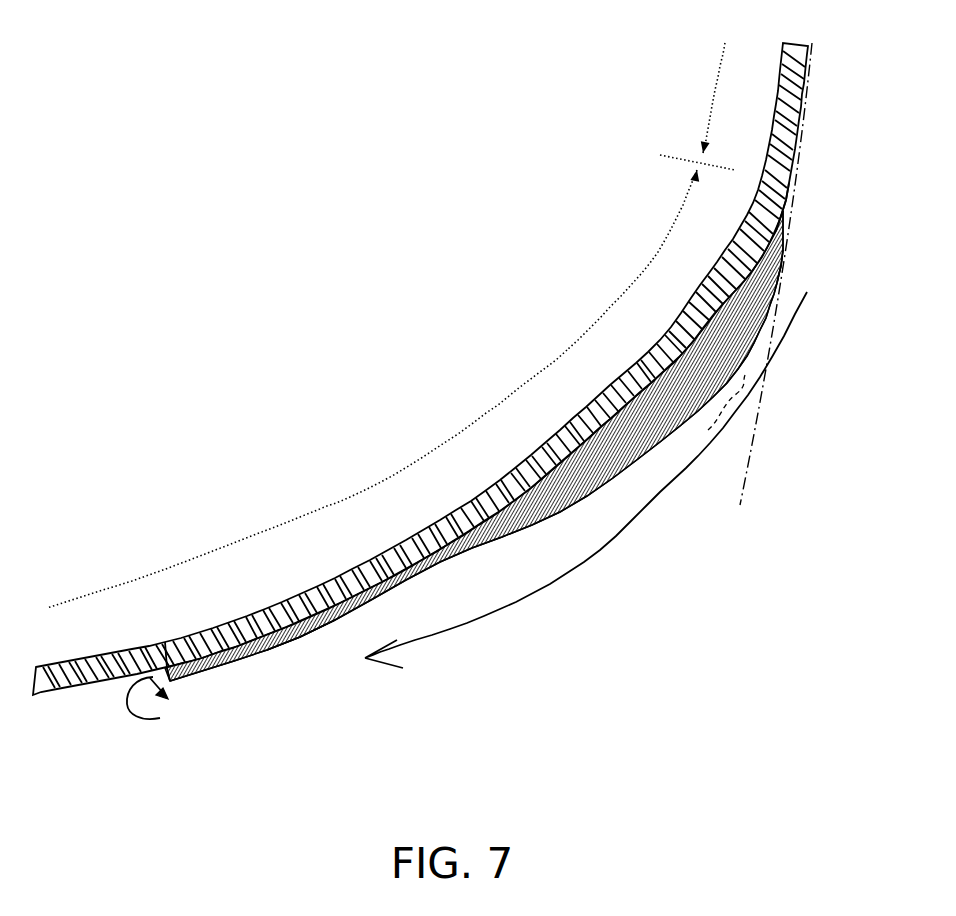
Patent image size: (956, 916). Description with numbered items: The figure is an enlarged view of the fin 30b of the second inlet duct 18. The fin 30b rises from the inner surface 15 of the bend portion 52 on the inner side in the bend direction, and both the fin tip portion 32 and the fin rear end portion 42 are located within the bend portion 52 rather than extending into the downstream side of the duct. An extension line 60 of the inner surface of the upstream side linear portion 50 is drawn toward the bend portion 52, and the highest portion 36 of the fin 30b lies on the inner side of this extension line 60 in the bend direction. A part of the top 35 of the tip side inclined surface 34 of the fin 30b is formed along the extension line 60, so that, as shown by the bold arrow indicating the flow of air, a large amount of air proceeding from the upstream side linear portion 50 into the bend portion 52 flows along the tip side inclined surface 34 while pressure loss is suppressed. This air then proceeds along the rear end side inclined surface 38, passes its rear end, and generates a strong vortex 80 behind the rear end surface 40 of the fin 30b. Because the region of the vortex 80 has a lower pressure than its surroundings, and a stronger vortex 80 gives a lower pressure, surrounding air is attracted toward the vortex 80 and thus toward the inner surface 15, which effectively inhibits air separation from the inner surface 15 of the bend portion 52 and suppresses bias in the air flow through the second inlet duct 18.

The inner surface 15 is at (84, 688).
The second inlet duct 18 is at (365, 557).
The fin 30b is at (319, 632).
The fin tip portion 32 is at (781, 211).
The tip side inclined surface 34 is at (781, 268).
The top 35 is at (640, 460).
The highest portion 36 is at (716, 413).
The rear end side inclined surface 38 is at (520, 532).
The rear end surface 40 is at (172, 690).
The fin rear end portion 42 is at (164, 642).
The upstream side linear portion 50 is at (716, 88).
The bend portion 52 is at (308, 512).
The extension line 60 is at (750, 459).
The vortex 80 is at (140, 721).